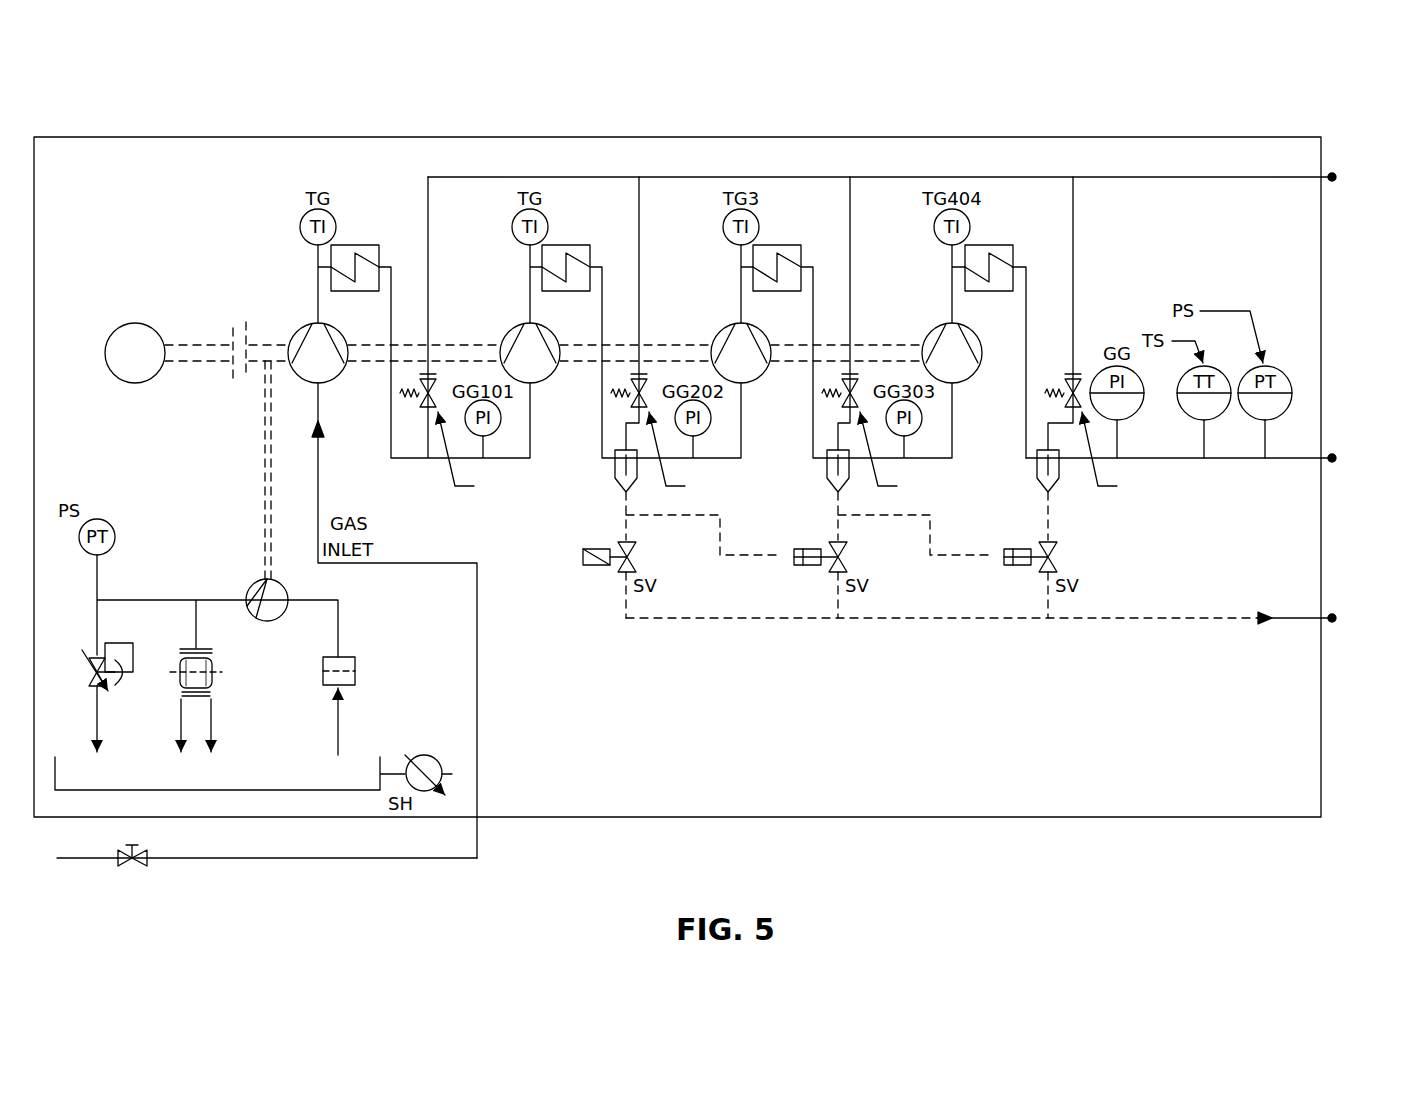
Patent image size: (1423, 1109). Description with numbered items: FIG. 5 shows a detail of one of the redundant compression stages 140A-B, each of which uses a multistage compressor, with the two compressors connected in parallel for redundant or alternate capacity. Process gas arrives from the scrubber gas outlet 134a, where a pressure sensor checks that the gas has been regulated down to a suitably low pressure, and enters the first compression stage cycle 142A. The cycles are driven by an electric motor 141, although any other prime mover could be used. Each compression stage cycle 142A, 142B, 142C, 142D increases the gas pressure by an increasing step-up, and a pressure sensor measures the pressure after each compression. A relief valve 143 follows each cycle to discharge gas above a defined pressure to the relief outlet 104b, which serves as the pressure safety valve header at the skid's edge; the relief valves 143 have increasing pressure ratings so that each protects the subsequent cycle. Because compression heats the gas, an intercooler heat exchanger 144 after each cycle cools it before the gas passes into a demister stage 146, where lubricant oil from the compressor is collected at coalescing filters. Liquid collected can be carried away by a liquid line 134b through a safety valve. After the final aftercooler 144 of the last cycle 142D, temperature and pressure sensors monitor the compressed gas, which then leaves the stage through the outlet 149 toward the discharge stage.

The redundant compression stages 140A-B is at (154, 98).
The electric motor 141 is at (136, 323).
The first compression stage cycle 142A is at (311, 323).
The second compression stage cycle 142B is at (523, 323).
The third compression stage cycle 142C is at (734, 323).
The fourth compression stage cycle 142D is at (945, 323).
The relief valve 143 is at (555, 498).
The intercooler heat exchanger 144 is at (356, 244).
The demister stage 146 is at (615, 465).
The relief outlet 104b is at (1405, 192).
The compressed gas outlet 149 is at (1392, 473).
The liquid line 134b is at (1405, 633).
The gas outlet 134a is at (117, 860).